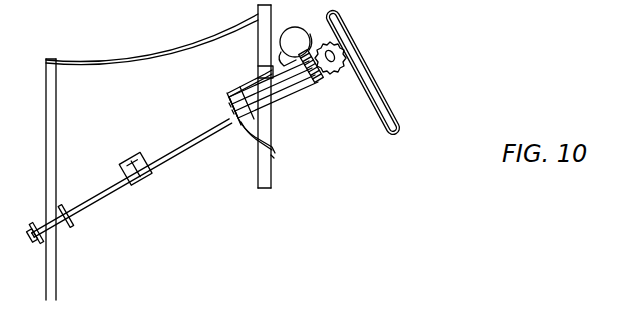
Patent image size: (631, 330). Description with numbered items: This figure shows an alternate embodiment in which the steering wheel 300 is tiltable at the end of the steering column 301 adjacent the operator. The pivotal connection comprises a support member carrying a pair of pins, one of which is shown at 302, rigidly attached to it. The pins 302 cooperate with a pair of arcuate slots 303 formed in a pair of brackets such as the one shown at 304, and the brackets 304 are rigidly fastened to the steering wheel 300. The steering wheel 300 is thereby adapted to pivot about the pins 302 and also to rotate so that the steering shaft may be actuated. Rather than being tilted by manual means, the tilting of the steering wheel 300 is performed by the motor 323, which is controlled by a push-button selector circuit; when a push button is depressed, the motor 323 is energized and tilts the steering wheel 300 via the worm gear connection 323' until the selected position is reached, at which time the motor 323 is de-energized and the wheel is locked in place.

The steering wheel 300 is at (366, 74).
The steering column 301 is at (316, 88).
The pin 302 is at (335, 56).
The arcuate slot 303 is at (338, 42).
The bracket 304 is at (300, 29).
The motor 323 is at (270, 45).
The worm gear connection 323' is at (324, 83).